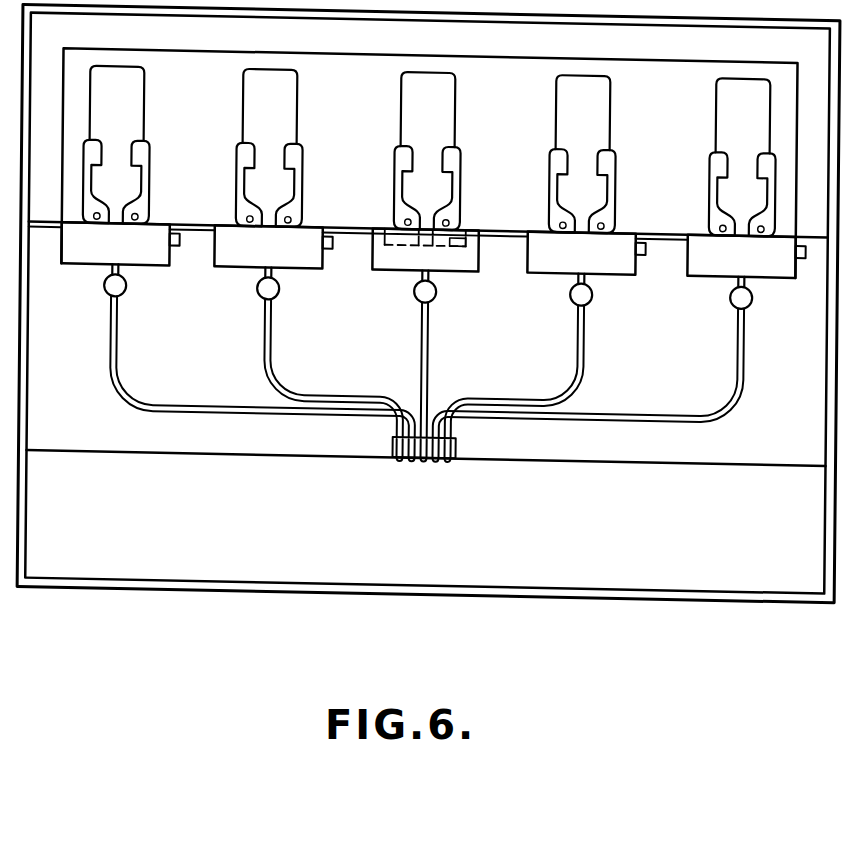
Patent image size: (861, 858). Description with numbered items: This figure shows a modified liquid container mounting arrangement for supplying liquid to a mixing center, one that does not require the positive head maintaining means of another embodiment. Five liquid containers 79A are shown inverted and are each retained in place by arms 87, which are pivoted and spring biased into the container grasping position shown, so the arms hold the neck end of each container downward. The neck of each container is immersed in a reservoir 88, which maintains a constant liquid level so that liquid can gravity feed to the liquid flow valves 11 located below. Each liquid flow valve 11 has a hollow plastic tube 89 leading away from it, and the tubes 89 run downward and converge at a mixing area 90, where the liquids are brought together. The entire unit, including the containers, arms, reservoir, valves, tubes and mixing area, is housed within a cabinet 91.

The liquid container 79A is at (430, 110).
The arm 87 is at (429, 176).
The reservoir 88 is at (461, 224).
The liquid flow valve 11 is at (129, 283).
The hollow plastic tube 89 is at (123, 347).
The mixing area 90 is at (460, 437).
The cabinet 91 is at (486, 577).